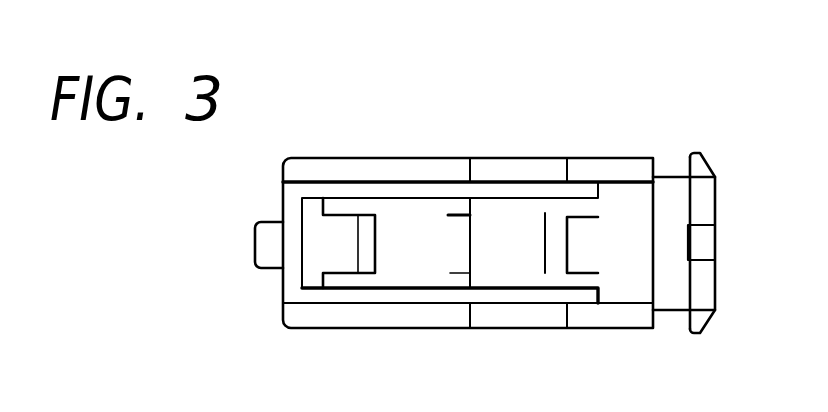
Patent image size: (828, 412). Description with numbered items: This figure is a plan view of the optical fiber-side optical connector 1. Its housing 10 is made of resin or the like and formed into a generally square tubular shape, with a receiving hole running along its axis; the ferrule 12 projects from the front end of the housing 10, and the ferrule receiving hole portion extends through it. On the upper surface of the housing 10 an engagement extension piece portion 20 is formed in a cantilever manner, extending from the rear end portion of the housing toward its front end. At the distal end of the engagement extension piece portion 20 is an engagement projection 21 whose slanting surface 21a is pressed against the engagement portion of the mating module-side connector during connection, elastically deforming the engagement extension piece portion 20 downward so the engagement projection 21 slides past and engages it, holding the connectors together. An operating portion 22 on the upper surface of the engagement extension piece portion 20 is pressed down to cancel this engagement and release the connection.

The optical fiber-side optical connector 1 is at (480, 112).
The housing 10 is at (612, 158).
The ferrule 12 is at (267, 270).
The engagement extension piece portion 20 is at (410, 272).
The engagement projection 21 is at (365, 207).
The slanting surface 21a is at (338, 223).
The operating portion 22 is at (517, 222).